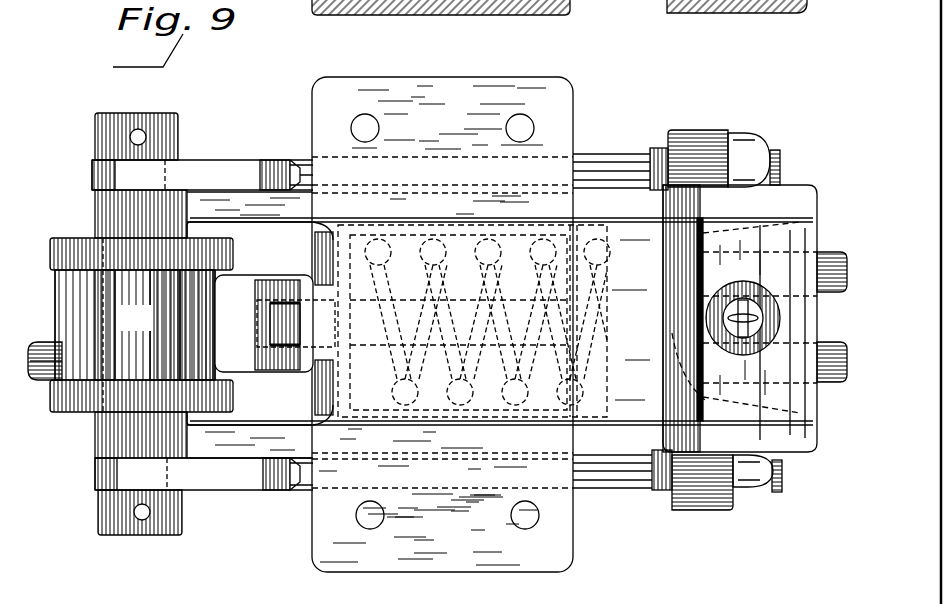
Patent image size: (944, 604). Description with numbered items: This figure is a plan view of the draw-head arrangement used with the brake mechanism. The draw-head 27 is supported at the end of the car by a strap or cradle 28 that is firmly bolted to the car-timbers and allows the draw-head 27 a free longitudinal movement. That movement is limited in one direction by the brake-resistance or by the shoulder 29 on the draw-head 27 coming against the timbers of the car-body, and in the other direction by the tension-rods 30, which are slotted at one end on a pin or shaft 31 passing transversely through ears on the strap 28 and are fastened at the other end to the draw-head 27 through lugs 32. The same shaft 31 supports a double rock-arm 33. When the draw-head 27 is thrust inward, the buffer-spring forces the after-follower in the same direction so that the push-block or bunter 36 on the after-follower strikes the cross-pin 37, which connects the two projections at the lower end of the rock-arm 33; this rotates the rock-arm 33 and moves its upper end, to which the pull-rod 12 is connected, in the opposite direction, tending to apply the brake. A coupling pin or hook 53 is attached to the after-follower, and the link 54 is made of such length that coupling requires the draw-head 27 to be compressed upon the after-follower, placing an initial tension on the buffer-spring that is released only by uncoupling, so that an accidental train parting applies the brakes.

The pull-rod 12 is at (42, 381).
The draw-head 27 is at (501, 321).
The strap or cradle 28 is at (490, 9).
The shoulder 29 is at (605, 380).
The tension-rods 30 is at (618, 486).
The pin or shaft 31 is at (118, 192).
The lugs 32 is at (712, 133).
The rock-arm 33 is at (90, 248).
The push-block or bunter 36 is at (260, 323).
The cross-pin 37 is at (196, 325).
The coupling pin or hook 53 is at (290, 328).
The link 54 is at (835, 382).